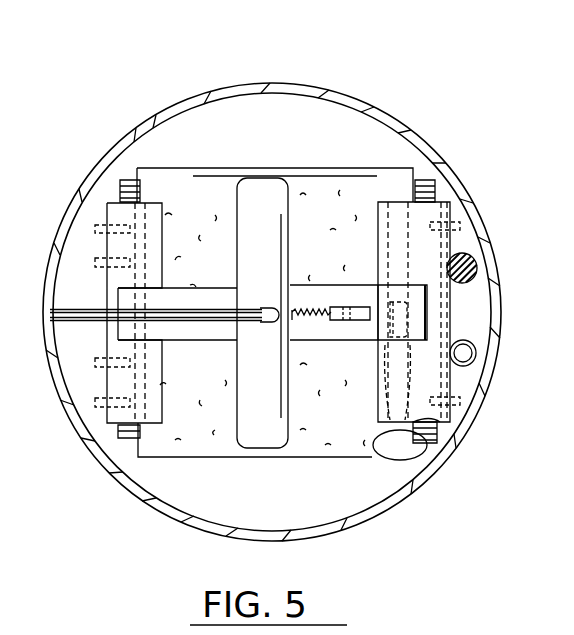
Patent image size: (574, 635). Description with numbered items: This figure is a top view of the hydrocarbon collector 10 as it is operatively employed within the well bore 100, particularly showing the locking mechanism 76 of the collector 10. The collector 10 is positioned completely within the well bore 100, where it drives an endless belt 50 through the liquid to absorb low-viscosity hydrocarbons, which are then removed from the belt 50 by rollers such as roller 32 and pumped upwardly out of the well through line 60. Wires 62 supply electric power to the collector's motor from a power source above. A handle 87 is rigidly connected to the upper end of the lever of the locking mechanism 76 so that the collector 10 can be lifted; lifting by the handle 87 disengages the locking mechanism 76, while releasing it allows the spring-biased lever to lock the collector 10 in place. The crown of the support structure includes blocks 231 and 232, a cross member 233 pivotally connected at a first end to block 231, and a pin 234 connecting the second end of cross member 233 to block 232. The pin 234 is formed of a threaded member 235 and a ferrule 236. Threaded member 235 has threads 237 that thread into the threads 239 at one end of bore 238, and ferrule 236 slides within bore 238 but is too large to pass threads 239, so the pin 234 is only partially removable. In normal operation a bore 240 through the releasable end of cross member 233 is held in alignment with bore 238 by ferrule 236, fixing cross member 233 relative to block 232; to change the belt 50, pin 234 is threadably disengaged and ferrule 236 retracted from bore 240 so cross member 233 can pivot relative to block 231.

The well bore 100 is at (176, 106).
The hydrocarbon collector 10 is at (373, 160).
The endless belt 50 is at (324, 236).
The handle 87 is at (272, 253).
The roller 32 is at (128, 178).
The block 231 is at (93, 298).
The cross member 233 is at (206, 340).
The locking mechanism 76 is at (168, 423).
The ferrule 236 is at (403, 278).
The wires 62 is at (474, 257).
The block 232 is at (472, 297).
The bore 240 is at (412, 311).
The bore 238 is at (383, 368).
The threads 237 is at (387, 412).
The line 60 is at (474, 366).
The threads 239 is at (438, 428).
The pin 234 is at (392, 452).
The threaded member 235 is at (412, 456).